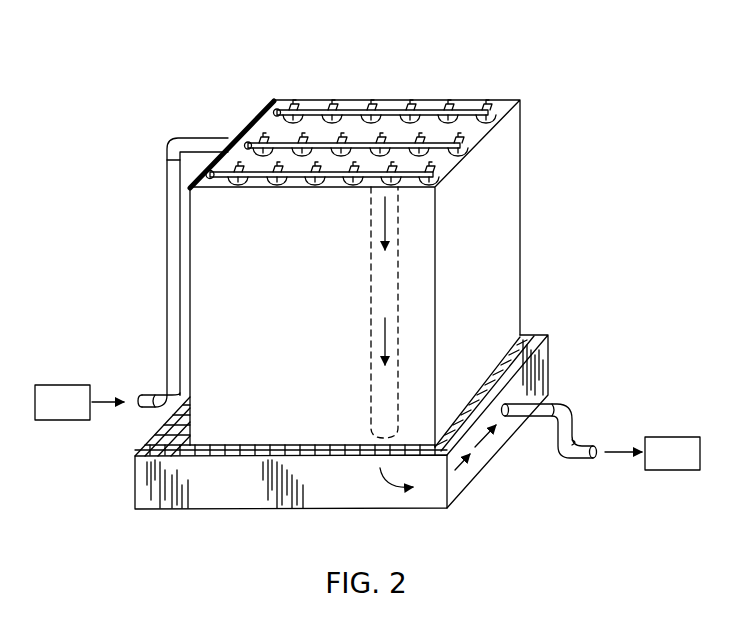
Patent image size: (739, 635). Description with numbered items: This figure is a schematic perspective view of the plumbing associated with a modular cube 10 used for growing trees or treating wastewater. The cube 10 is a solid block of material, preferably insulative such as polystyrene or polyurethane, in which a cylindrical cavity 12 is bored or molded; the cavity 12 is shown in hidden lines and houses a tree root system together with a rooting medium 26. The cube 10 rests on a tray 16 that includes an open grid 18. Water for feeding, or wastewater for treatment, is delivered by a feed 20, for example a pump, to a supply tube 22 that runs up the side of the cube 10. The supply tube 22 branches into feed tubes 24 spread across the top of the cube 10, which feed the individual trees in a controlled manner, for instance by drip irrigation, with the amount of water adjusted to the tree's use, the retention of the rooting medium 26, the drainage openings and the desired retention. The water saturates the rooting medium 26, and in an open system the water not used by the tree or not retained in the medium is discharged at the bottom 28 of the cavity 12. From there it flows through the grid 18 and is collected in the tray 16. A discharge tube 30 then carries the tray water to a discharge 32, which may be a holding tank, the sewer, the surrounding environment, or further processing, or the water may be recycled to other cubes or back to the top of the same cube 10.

The cube 10 is at (541, 267).
The cylindrical cavity 12 is at (397, 176).
The tray 16 is at (143, 492).
The grid 18 is at (152, 434).
The feed 20 is at (79, 402).
The supply tube 22 is at (165, 287).
The feed tubes 24 is at (318, 114).
The rooting medium 26 is at (400, 327).
The bottom of the cavity 28 is at (375, 443).
The discharge tube 30 is at (573, 412).
The discharge 32 is at (652, 453).